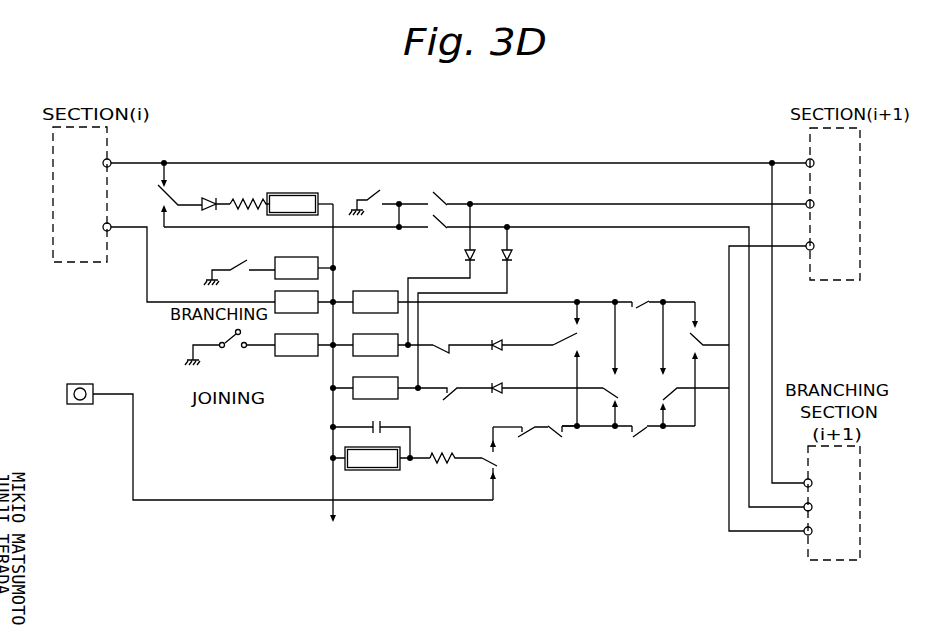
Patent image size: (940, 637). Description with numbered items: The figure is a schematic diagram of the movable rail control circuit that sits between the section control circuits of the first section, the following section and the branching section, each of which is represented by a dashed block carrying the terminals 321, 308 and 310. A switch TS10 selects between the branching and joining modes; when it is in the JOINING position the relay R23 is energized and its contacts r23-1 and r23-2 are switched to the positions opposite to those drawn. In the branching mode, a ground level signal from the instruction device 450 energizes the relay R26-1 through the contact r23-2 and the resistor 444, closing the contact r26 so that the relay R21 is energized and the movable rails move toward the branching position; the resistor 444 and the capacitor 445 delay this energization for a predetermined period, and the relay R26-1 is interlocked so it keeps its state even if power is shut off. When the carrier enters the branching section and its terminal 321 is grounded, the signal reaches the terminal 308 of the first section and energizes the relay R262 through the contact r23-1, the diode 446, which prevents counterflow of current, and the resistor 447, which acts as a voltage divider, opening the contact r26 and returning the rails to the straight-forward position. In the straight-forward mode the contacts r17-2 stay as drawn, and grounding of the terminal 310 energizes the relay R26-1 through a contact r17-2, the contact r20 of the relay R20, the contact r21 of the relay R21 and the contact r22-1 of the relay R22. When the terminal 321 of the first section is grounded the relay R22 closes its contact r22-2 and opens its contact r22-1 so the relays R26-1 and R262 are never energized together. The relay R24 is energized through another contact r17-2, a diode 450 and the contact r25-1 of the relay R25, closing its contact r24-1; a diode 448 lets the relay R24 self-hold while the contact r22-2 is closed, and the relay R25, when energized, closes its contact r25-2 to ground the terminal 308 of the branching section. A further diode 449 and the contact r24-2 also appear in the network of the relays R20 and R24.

The terminal 308 is at (111, 160).
The terminal 321 is at (119, 219).
The terminal 310 is at (814, 244).
The resistor 444 is at (446, 455).
The capacitor 445 is at (379, 423).
The diode 446 is at (212, 193).
The resistor 447 is at (252, 203).
The diode 448 is at (463, 253).
The diode 449 is at (512, 257).
The instruction device 450 is at (495, 342).
The contact of relay R23 r23-1 is at (160, 189).
The contact of relay R22 r22-2 is at (367, 198).
The contact of relay R24 r24-2 is at (443, 197).
The contact of relay R25 r25-2 is at (430, 233).
The contact of relay R26-1 / R262 r26 is at (236, 264).
The contact of relay R25 r25-1 is at (437, 343).
The contact of relay R24 r24-1 is at (455, 376).
The contact of relay R21 r21 is at (637, 302).
The contact of relay R22 r22-1 is at (523, 427).
The contact of relay R23 r23-2 is at (498, 463).
The contact of relay R20 r20 is at (640, 434).
The contact of relay R17 r17-2 is at (622, 389).
The switch TS10 is at (236, 354).
The relay R262 is at (300, 204).
The relay R21 is at (305, 268).
The relay R22 is at (314, 302).
The relay R20 is at (524, 302).
The relay R23 is at (314, 345).
The relay R24 is at (393, 345).
The relay R25 is at (388, 388).
The relay R26-1 is at (380, 458).